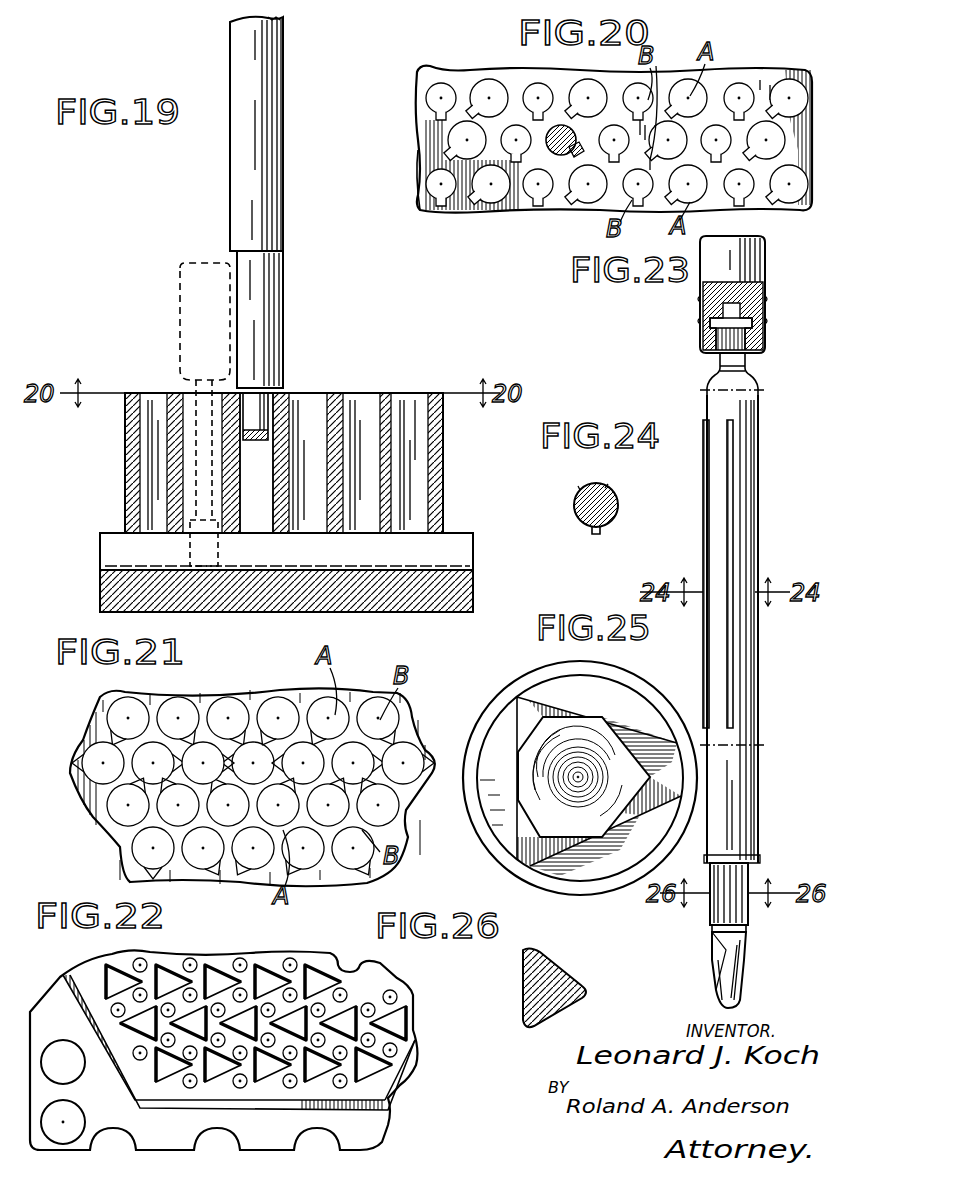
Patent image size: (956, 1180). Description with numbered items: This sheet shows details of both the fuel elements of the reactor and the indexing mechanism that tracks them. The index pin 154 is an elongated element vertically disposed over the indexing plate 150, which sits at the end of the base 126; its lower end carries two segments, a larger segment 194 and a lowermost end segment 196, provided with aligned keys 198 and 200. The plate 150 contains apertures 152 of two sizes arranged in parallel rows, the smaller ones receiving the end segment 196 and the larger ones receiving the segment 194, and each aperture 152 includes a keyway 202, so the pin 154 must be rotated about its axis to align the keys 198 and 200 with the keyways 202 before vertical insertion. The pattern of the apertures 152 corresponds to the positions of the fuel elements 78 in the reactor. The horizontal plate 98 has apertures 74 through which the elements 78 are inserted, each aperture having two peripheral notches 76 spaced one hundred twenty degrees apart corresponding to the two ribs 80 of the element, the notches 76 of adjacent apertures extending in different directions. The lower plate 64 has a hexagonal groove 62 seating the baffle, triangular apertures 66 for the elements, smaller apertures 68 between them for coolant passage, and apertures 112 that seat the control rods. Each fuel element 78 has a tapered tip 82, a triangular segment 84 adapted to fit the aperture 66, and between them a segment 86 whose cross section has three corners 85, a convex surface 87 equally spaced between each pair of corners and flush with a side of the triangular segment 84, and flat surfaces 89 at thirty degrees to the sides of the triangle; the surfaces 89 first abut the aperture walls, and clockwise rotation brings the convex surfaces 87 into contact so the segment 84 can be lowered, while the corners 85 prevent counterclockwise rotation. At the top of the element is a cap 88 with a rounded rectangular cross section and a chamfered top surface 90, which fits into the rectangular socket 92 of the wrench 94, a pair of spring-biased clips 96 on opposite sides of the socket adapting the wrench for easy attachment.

In FIG. 22, the hexagonal groove 62 is at (385, 1108).
In FIG. 22, the lower plate 64 is at (400, 1080).
In FIG. 22, the triangular apertures 66 is at (268, 962).
In FIG. 22, the smaller apertures 68 is at (392, 1050).
In FIG. 21, the apertures 74 is at (180, 706).
In FIG. 21, the peripheral notches 76 is at (105, 732).
In FIG. 23, the fuel element 78 is at (758, 442).
In FIG. 24, the fuel element 78 is at (615, 512).
In FIG. 23, the ribs or fins 80 is at (728, 468).
In FIG. 24, the ribs or fins 80 is at (575, 510).
In FIG. 23, the tapered tip 82 is at (742, 975).
In FIG. 23, the triangular segment 84 is at (748, 915).
In FIG. 26, the triangular segment 84 is at (560, 980).
In FIG. 23, the corners 85 is at (725, 940).
In FIG. 25, the corners 85 is at (535, 692).
In FIG. 23, the segment 86 is at (712, 950).
In FIG. 25, the convex surface 87 is at (517, 772).
In FIG. 23, the cap 88 is at (726, 355).
In FIG. 25, the flat surface 89 is at (517, 737).
In FIG. 23, the chamfered top surface 90 is at (752, 325).
In FIG. 23, the rectangular socket 92 is at (716, 332).
In FIG. 23, the wrench 94 is at (765, 245).
In FIG. 23, the spring-biased clips 96 is at (703, 304).
In FIG. 21, the plate 98 is at (375, 693).
In FIG. 22, the apertures 112 is at (80, 1122).
In FIG. 19, the base 126 is at (100, 596).
In FIG. 19, the indexing plate 150 is at (125, 476).
In FIG. 20, the indexing plate 150 is at (418, 160).
In FIG. 19, the apertures 152 is at (145, 393).
In FIG. 20, the apertures 152 is at (520, 200).
In FIG. 19, the pin 154 is at (245, 165).
In FIG. 19, the segment 194 is at (245, 262).
In FIG. 19, the end segment 196 is at (258, 406).
In FIG. 20, the end segment 196 is at (560, 125).
In FIG. 19, the key 198 is at (283, 304).
In FIG. 19, the key 200 is at (270, 416).
In FIG. 20, the key 200 is at (572, 160).
In FIG. 19, the keyway 202 is at (380, 405).
In FIG. 20, the keyway 202 is at (430, 212).